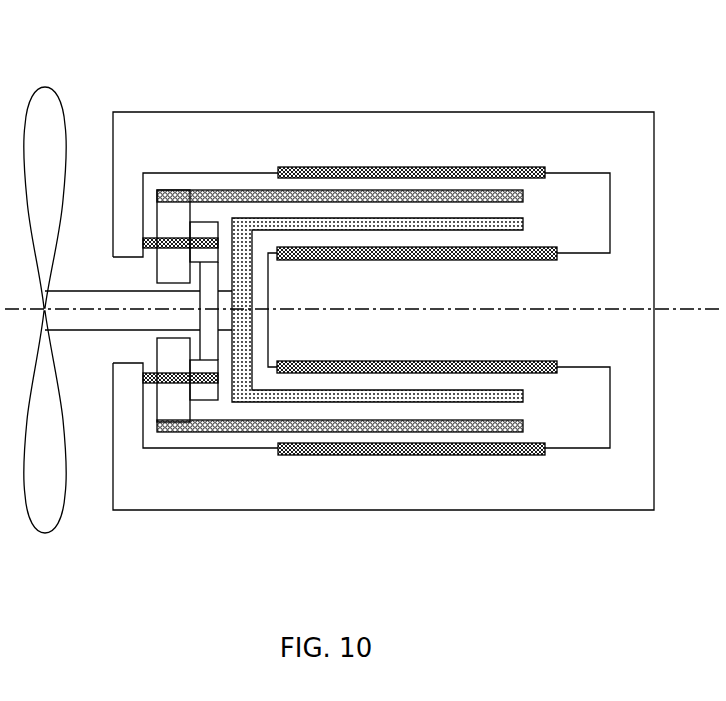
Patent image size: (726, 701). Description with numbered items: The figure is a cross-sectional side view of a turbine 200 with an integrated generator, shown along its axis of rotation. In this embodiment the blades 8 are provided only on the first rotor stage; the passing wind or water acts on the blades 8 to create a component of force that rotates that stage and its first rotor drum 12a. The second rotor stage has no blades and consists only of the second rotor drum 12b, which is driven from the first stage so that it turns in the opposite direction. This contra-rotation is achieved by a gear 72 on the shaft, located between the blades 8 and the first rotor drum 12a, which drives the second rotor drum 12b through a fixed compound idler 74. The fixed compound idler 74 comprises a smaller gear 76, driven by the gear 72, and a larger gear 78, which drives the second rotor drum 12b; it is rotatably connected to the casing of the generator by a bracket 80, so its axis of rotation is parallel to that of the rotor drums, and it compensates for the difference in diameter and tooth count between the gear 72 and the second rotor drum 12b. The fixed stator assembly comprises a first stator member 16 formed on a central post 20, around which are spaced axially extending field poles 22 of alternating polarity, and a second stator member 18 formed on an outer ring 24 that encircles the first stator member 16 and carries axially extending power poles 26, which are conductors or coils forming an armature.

The blades 8 is at (53, 484).
The turbine 200 is at (375, 288).
The second stator member 18 is at (577, 140).
The first stator member 16 is at (375, 296).
The gear 72 is at (207, 302).
The larger gear 78 is at (172, 216).
The fixed compound idler 74 is at (183, 204).
The smaller gear 76 is at (207, 228).
The bracket 80 is at (152, 387).
The outer ring 24 is at (447, 156).
The second rotor drum 12b is at (325, 190).
The power poles 26 is at (490, 168).
The field poles 22 is at (443, 362).
The central post 20 is at (366, 349).
The first rotor drum 12a is at (352, 223).